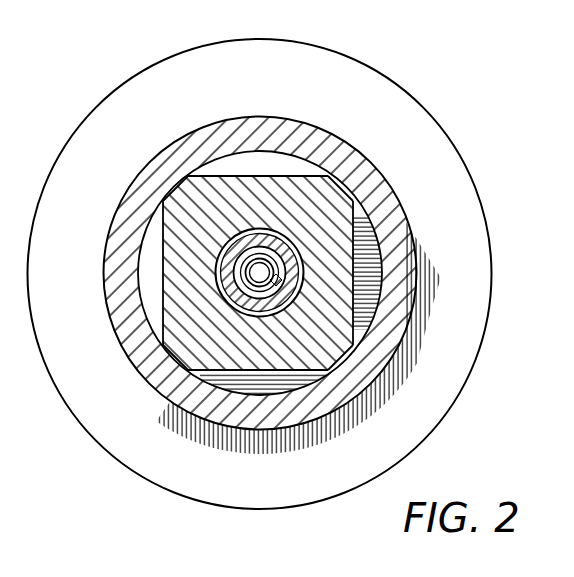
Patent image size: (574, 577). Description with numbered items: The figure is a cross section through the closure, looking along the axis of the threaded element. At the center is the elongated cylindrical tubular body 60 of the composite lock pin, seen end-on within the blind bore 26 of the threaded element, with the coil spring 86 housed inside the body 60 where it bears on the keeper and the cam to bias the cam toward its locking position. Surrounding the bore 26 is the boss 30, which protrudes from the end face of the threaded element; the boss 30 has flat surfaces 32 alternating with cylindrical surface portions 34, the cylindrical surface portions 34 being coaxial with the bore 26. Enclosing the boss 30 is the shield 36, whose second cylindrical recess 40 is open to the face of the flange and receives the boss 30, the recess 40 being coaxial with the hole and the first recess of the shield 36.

The blind bore 26 is at (207, 313).
The boss 30 is at (344, 218).
The flat surfaces 32 is at (218, 174).
The cylindrical surface portions 34 is at (176, 196).
The shield 36 is at (166, 46).
The second cylindrical recess 40 is at (370, 248).
The tubular body 60 is at (243, 229).
The coil spring 86 is at (262, 251).